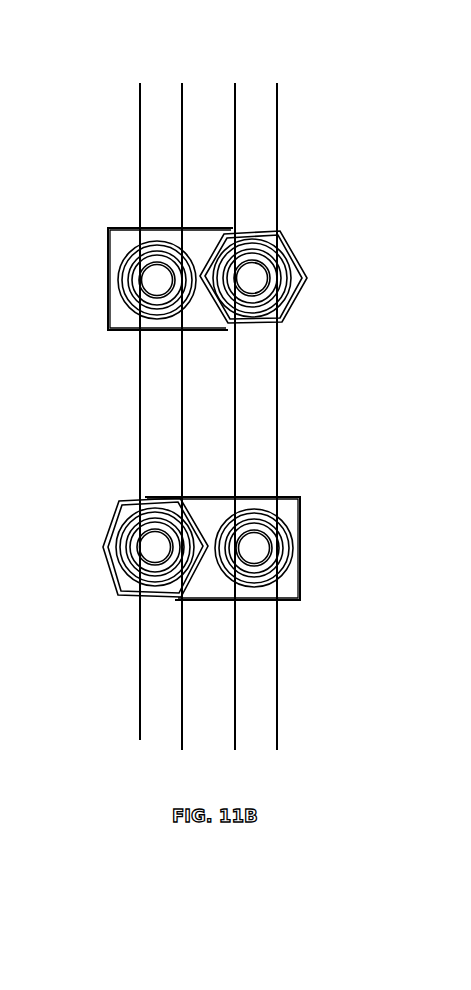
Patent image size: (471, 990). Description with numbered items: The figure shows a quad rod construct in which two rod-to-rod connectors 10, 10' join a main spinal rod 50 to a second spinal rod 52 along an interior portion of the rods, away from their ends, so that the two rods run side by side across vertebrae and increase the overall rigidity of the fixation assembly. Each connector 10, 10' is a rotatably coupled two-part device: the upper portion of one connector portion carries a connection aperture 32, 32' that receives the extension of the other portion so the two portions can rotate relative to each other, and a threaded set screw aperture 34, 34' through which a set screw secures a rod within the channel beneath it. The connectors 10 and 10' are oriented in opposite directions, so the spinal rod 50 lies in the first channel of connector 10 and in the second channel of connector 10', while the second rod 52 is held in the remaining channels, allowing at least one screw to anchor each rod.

The rod-to-rod connector 10 is at (172, 506).
The rod-to-rod connector 10' is at (137, 230).
The connection aperture 32 is at (128, 564).
The connection aperture 32' is at (284, 314).
The set screw aperture 34 is at (289, 571).
The set screw aperture 34' is at (133, 304).
The first spinal rod 50 is at (264, 150).
The second spinal rod 52 is at (167, 686).